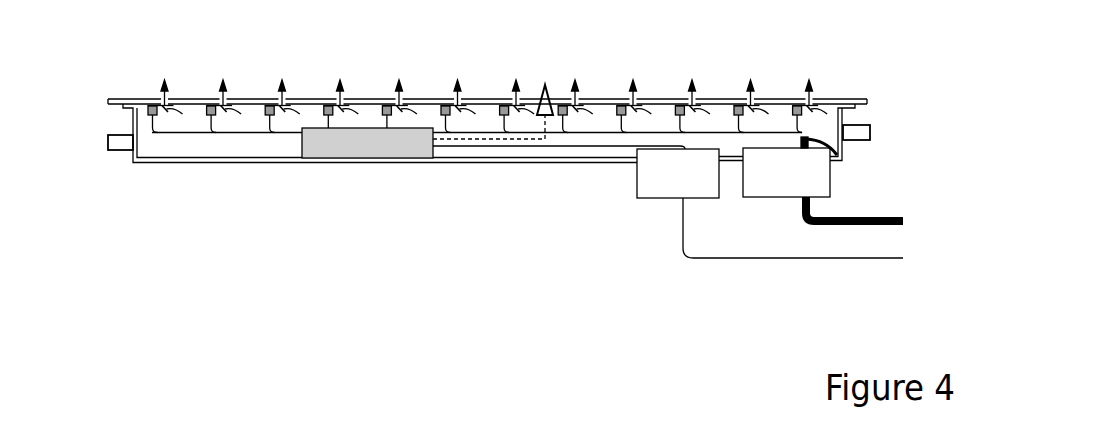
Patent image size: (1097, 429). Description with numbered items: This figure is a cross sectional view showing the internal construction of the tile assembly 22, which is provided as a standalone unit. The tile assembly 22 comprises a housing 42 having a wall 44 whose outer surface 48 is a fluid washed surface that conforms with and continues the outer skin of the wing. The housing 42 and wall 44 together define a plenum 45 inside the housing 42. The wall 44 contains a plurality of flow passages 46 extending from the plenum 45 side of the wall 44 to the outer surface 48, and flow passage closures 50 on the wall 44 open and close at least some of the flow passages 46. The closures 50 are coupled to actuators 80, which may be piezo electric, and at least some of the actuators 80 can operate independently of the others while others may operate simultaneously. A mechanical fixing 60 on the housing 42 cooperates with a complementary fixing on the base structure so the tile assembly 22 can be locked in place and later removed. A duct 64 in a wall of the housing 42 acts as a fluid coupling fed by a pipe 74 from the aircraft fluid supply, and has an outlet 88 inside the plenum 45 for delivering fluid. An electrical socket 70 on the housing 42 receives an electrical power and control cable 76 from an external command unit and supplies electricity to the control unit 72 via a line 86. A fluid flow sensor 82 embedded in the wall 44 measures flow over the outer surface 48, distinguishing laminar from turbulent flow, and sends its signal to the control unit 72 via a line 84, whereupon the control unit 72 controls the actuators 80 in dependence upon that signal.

The tile assembly 22 is at (110, 84).
The housing 42 is at (222, 161).
The wall 44 is at (855, 98).
The plenum 45 is at (150, 148).
The flow passages 46 is at (512, 97).
The outer surface 48 is at (368, 99).
The flow passage closures 50 is at (280, 108).
The mechanical fixing 60 is at (108, 140).
The duct 64 is at (832, 176).
The electrical socket 70 is at (638, 192).
The control unit 72 is at (377, 153).
The pipe 74 is at (903, 221).
The electrical power and control cable 76 is at (792, 258).
The actuators 80 is at (267, 107).
The fluid flow sensor 82 is at (541, 86).
The line 84 is at (533, 141).
The line 86 is at (490, 146).
The outlet 88 is at (838, 156).